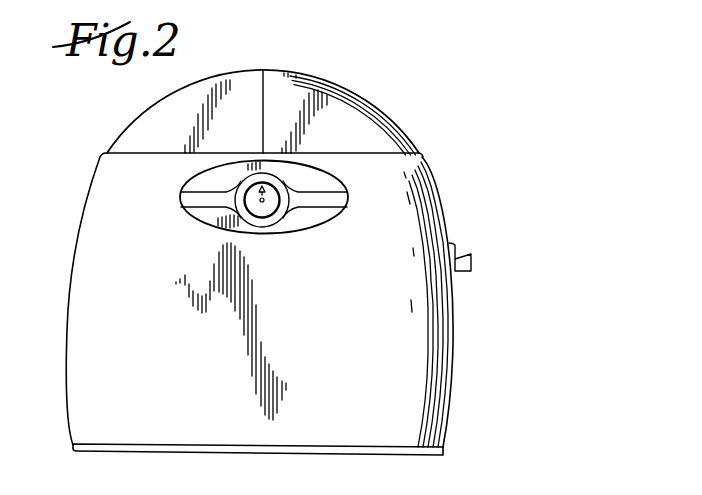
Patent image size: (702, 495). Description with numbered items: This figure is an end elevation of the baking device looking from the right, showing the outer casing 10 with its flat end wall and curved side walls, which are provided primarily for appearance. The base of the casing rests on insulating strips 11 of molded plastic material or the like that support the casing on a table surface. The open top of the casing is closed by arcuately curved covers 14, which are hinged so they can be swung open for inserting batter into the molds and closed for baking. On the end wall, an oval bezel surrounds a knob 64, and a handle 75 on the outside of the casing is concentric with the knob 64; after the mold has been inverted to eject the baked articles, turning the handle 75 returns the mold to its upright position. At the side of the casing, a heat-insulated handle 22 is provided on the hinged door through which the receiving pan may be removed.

The outer casing 10 is at (451, 329).
The insulating strips 11 is at (309, 452).
The arcuately curved covers 14 is at (330, 104).
The heat-insulated handle 22 is at (471, 262).
The knob 64 is at (277, 213).
The handle 75 is at (331, 205).